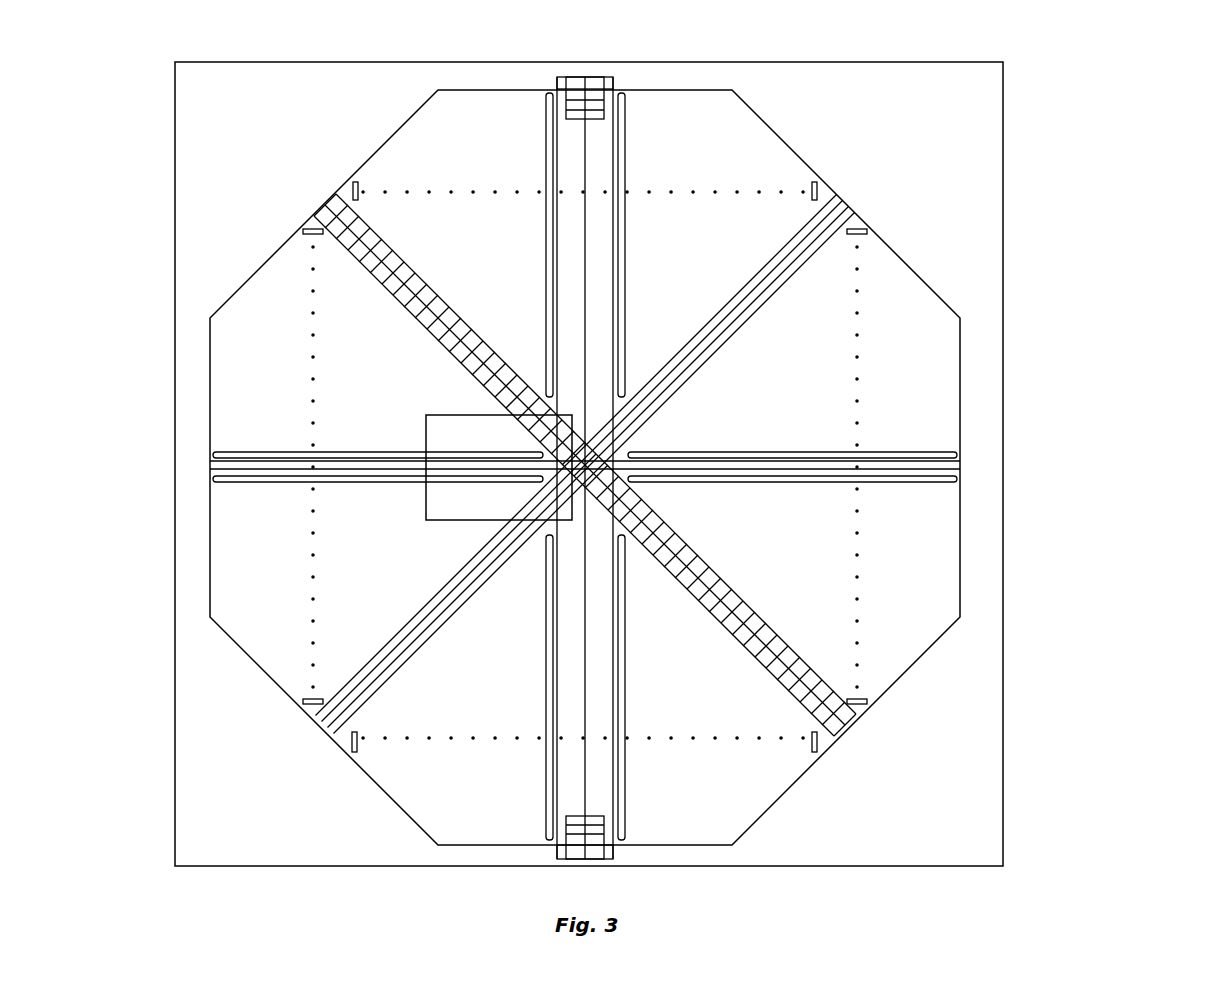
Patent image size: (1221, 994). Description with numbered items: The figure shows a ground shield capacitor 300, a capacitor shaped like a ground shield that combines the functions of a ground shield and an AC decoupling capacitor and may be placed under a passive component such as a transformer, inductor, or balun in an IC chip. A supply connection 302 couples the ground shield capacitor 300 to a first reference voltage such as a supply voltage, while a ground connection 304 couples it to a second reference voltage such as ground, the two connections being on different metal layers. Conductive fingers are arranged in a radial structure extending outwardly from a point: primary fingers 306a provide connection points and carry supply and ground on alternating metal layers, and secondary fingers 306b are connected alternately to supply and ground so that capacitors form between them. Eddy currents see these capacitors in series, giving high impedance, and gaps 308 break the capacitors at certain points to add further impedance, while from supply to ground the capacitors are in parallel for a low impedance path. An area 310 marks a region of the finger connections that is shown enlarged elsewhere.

The ground shield capacitor 300 is at (1097, 106).
The supply connection 302 is at (604, 97).
The ground connection 304 is at (604, 822).
The primary fingers 306a is at (565, 138).
The secondary fingers 306b is at (714, 680).
The gaps 308 is at (960, 465).
The area 310 is at (898, 243).